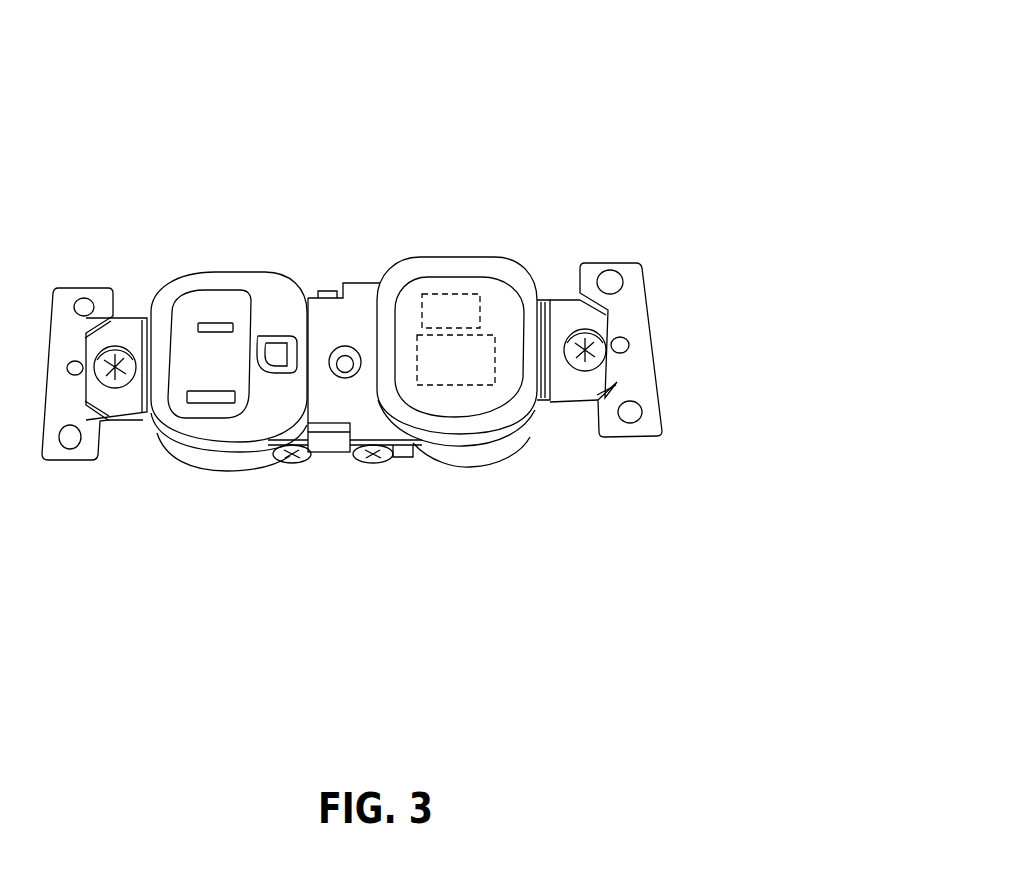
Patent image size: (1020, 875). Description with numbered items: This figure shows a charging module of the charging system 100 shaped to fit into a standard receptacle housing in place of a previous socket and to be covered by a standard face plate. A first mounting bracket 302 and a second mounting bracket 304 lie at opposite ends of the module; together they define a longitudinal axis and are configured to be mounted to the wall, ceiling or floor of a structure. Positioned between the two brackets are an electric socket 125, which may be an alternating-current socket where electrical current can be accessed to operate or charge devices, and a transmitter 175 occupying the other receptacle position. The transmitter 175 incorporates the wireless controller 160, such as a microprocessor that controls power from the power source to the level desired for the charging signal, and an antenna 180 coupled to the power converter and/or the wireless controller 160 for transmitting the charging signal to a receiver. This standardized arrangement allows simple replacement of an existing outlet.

The charging system 100 is at (530, 131).
The first mounting bracket 302 is at (80, 287).
The second mounting bracket 304 is at (644, 303).
The electric socket 125 is at (248, 430).
The transmitter 175 is at (489, 307).
The wireless controller 160 is at (446, 308).
The antenna 180 is at (457, 372).